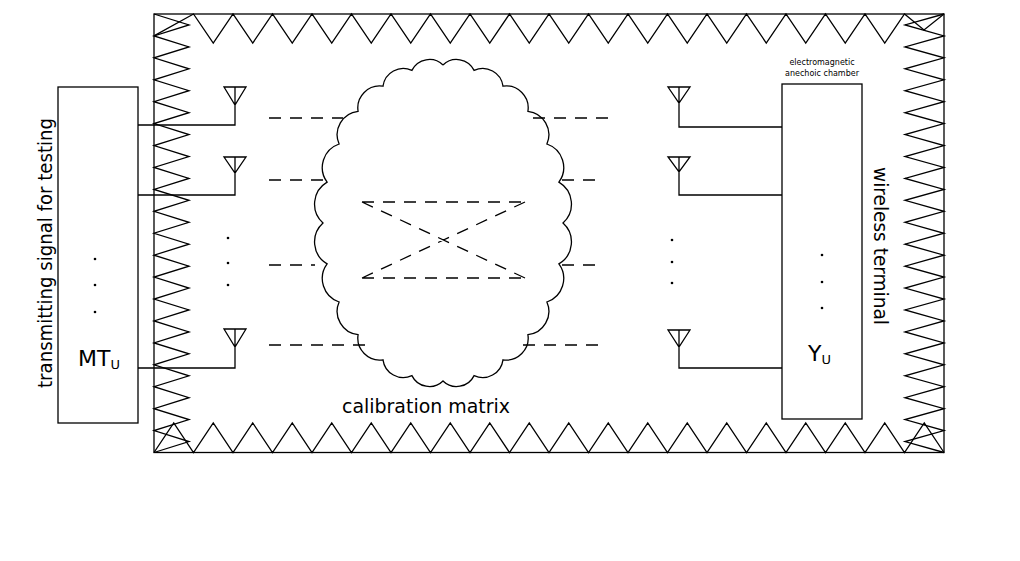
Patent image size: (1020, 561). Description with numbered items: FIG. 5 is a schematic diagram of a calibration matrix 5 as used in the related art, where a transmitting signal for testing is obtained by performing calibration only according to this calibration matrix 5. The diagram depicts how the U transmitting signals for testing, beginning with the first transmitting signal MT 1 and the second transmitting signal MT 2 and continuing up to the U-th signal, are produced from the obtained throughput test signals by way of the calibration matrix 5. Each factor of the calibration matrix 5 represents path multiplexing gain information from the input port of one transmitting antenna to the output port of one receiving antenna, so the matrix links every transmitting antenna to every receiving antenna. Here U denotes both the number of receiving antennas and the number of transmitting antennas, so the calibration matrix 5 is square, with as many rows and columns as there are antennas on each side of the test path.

The first test channel (MT1 / Y1) 1 is at (454, 124).
The second test channel (MT2 / Y2) 2 is at (454, 186).
The figure 5 caption 5 is at (482, 510).